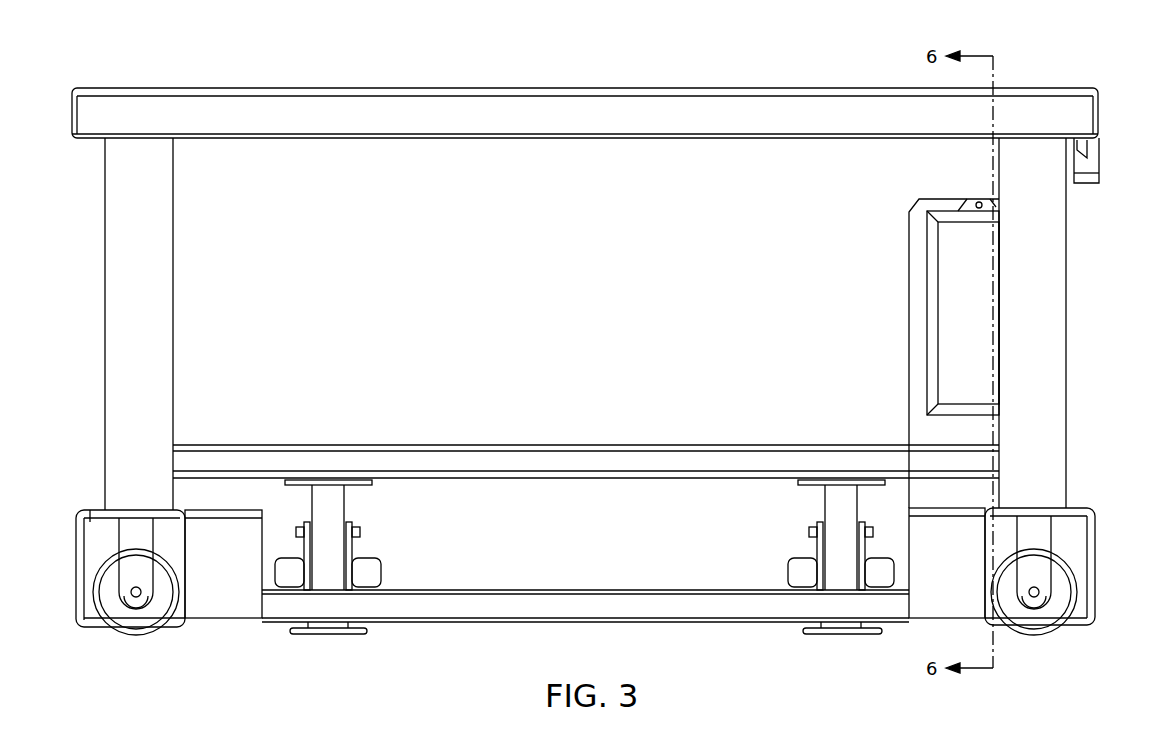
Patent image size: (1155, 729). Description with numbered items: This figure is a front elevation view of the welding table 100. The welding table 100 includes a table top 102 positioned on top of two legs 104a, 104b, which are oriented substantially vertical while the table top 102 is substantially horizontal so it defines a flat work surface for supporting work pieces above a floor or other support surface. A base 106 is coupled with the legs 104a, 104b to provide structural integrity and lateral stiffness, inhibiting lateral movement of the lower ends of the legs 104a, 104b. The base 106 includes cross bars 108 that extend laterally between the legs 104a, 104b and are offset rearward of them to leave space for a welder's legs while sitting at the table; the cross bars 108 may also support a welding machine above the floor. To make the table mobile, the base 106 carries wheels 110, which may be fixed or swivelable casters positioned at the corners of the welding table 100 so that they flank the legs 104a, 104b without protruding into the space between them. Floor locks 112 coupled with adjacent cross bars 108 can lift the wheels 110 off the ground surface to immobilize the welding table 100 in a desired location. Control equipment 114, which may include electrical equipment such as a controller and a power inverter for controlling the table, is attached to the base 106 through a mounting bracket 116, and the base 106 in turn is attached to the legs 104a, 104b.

The welding table 100 is at (692, 42).
The table top 102 is at (504, 88).
The leg 104a is at (159, 298).
The leg 104b is at (1038, 280).
The base 106 is at (708, 410).
The cross bar 108 is at (567, 455).
The wheel 110 is at (133, 628).
The floor lock 112 is at (313, 634).
The control equipment 114 is at (895, 259).
The mounting bracket 116 is at (927, 431).